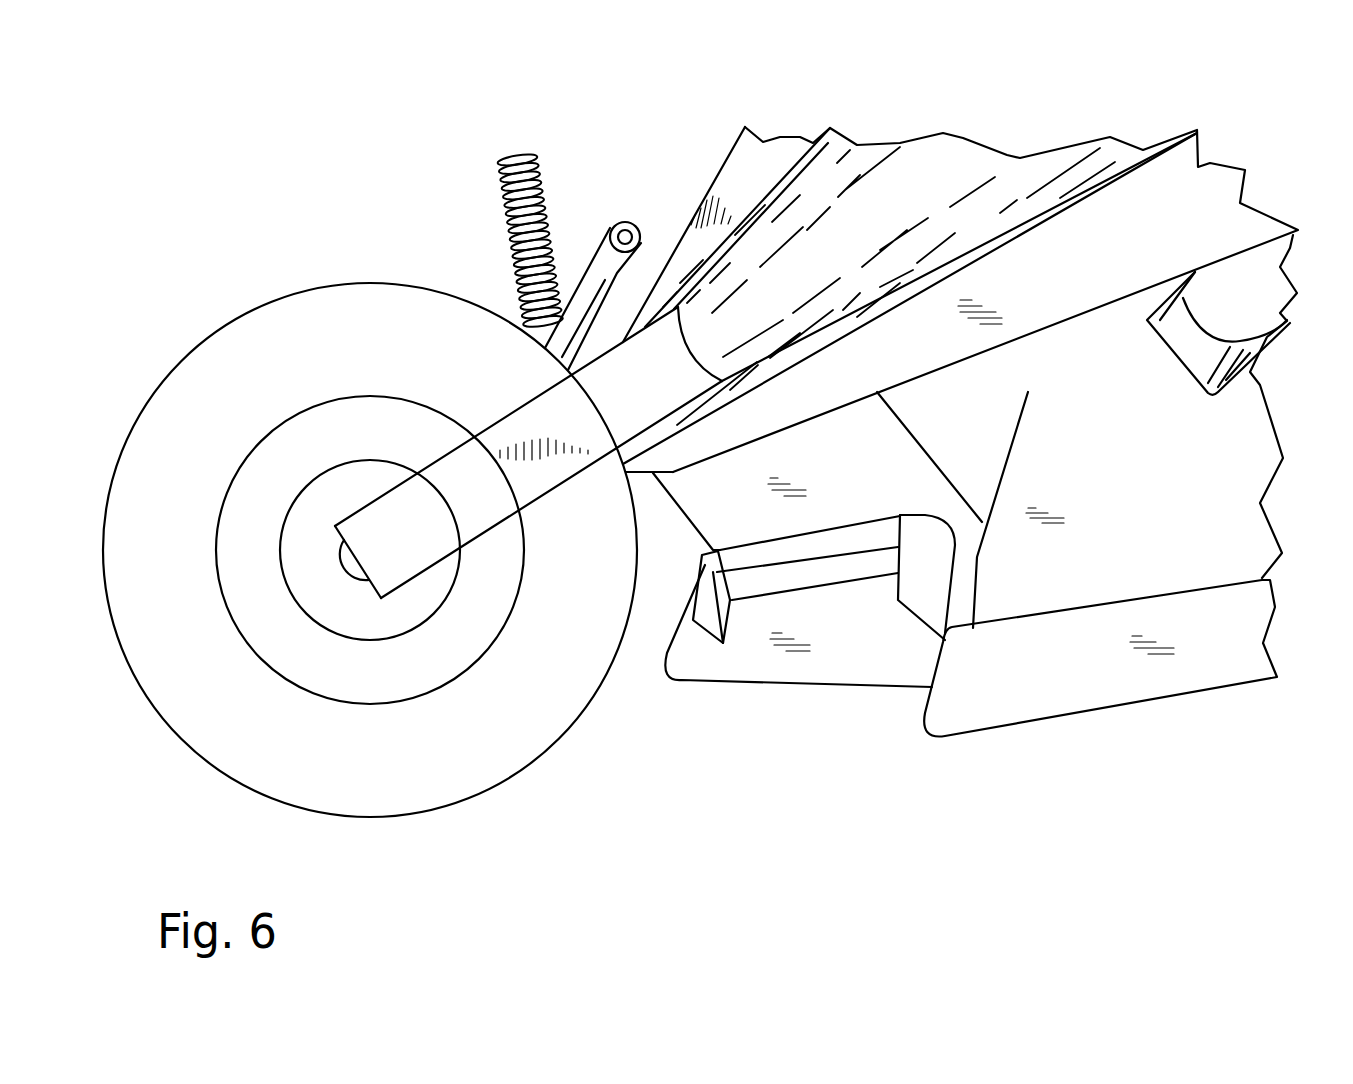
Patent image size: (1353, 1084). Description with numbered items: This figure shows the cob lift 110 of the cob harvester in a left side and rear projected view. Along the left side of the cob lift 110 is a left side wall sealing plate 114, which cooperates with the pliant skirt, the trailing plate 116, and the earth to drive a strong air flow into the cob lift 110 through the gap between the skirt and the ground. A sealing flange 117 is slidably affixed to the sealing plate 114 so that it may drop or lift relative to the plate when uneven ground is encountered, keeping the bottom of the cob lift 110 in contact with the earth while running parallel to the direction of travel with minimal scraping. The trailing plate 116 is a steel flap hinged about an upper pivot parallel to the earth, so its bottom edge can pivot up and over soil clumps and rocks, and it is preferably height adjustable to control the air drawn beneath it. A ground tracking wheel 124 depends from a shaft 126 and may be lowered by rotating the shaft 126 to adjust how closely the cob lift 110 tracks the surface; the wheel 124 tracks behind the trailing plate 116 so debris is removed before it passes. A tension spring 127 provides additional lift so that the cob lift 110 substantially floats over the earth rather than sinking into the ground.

The cob lift 110 is at (754, 82).
The left side wall sealing plate 114 is at (1144, 534).
The trailing plate 116 is at (863, 650).
The sealing flange 117 is at (1030, 700).
The ground tracking wheel 124 is at (397, 833).
The shaft 126 is at (1016, 168).
The tension spring 127 is at (513, 152).